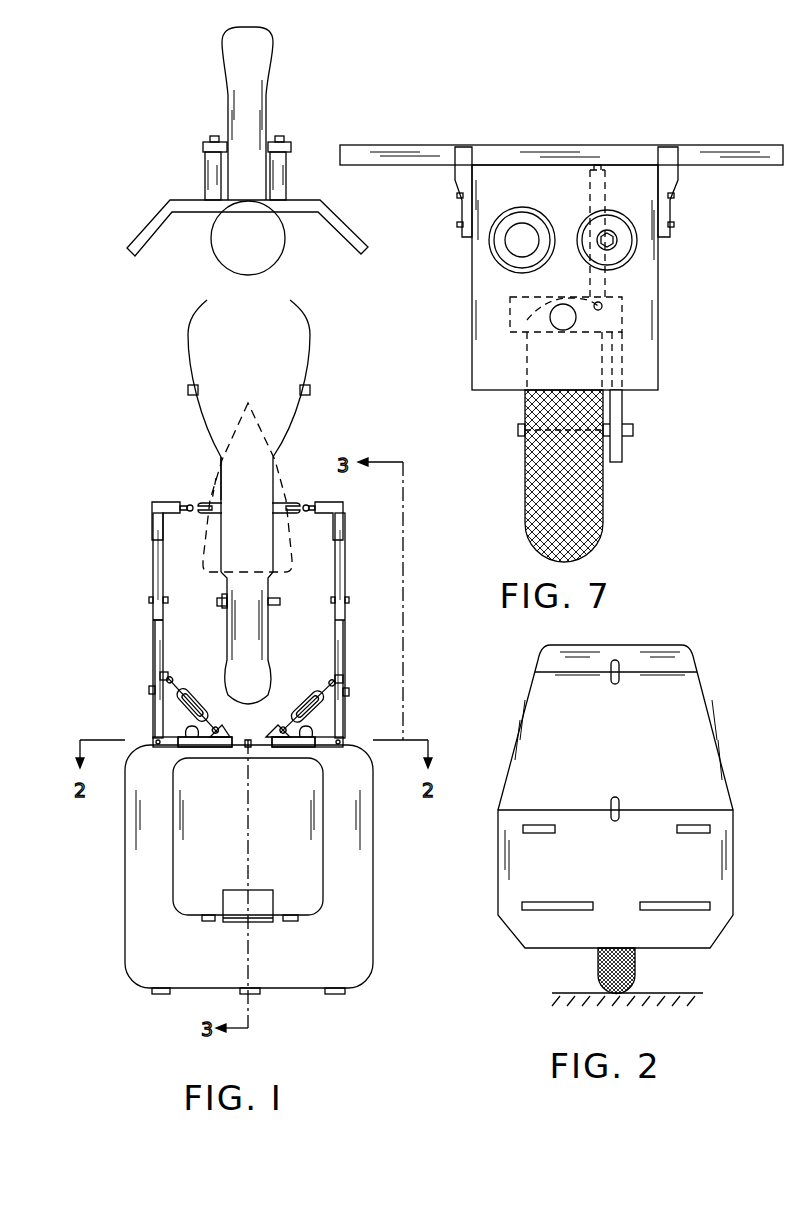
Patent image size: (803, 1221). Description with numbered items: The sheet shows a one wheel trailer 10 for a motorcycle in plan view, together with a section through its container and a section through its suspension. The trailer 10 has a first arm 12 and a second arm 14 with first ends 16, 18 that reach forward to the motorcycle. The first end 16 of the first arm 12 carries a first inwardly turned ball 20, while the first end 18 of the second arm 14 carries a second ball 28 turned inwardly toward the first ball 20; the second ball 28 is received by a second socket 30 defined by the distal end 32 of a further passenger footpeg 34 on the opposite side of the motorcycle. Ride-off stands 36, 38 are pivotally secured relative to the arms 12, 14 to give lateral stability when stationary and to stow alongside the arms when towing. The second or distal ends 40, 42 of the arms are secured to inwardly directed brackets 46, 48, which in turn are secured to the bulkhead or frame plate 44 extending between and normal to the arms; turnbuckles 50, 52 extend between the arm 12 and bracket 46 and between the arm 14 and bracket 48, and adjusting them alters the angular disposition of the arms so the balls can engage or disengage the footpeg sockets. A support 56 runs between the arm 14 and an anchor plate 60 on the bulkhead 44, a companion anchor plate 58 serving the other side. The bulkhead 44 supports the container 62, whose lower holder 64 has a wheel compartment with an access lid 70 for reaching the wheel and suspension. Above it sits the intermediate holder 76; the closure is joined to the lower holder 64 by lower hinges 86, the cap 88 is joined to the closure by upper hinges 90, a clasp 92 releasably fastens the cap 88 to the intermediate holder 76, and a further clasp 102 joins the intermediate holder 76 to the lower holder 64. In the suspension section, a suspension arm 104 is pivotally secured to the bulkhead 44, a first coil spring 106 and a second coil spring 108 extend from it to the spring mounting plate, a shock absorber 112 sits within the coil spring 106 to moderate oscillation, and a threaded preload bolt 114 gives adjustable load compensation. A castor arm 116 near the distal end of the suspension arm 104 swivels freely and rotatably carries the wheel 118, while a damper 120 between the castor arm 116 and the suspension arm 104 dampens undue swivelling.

In FIG. 1, the trailer 10 is at (116, 889).
In FIG. 1, the first arm 12 is at (335, 655).
In FIG. 1, the second arm 14 is at (153, 560).
In FIG. 1, the first end of the first arm 16 is at (343, 510).
In FIG. 1, the first end of the second arm 18 is at (157, 502).
In FIG. 1, the first inwardly turned ball 20 is at (306, 505).
In FIG. 1, the second ball 28 is at (190, 512).
In FIG. 1, the second socket 30 is at (207, 503).
In FIG. 1, the distal end of further passenger footpeg 32 is at (216, 498).
In FIG. 1, the further passenger footpeg 34 is at (222, 467).
In FIG. 1, the ride-off stand 36 is at (349, 698).
In FIG. 1, the ride-off stand 38 is at (150, 692).
In FIG. 1, the second or distal end of the first arm 40 is at (345, 741).
In FIG. 1, the second or distal end of the second arm 42 is at (153, 741).
In FIG. 7, the bulkhead or frame plate 44 is at (733, 150).
In FIG. 1, the bracket 46 is at (302, 747).
In FIG. 2, the bracket 46 is at (578, 911).
In FIG. 1, the bracket 48 is at (193, 747).
In FIG. 2, the bracket 48 is at (692, 911).
In FIG. 1, the turnbuckle 50 is at (300, 715).
In FIG. 1, the turnbuckle 52 is at (203, 715).
In FIG. 1, the support 56 is at (163, 625).
In FIG. 1, the anchor plate 58 is at (178, 733).
In FIG. 2, the anchor plate 58 is at (540, 834).
In FIG. 2, the anchor plate 60 is at (705, 834).
In FIG. 2, the container 62 is at (733, 750).
In FIG. 2, the lower holder 64 is at (715, 876).
In FIG. 1, the access lid 70 is at (238, 895).
In FIG. 2, the intermediate holder 76 is at (688, 720).
In FIG. 1, the lower hinges 86 is at (160, 994).
In FIG. 2, the cap 88 is at (680, 663).
In FIG. 1, the upper hinges 90 is at (208, 922).
In FIG. 2, the clasp 92 is at (616, 655).
In FIG. 2, the further clasp 102 is at (616, 797).
In FIG. 7, the suspension arm or plate 104 is at (638, 330).
In FIG. 7, the first coil spring 106 is at (493, 255).
In FIG. 7, the second coil spring 108 is at (635, 272).
In FIG. 7, the shock absorber 112 is at (522, 223).
In FIG. 7, the threaded preload bolt 114 is at (618, 243).
In FIG. 7, the castor arm 116 is at (610, 325).
In FIG. 7, the wheel 118 is at (600, 500).
In FIG. 2, the wheel 118 is at (598, 963).
In FIG. 7, the damper 120 is at (607, 190).